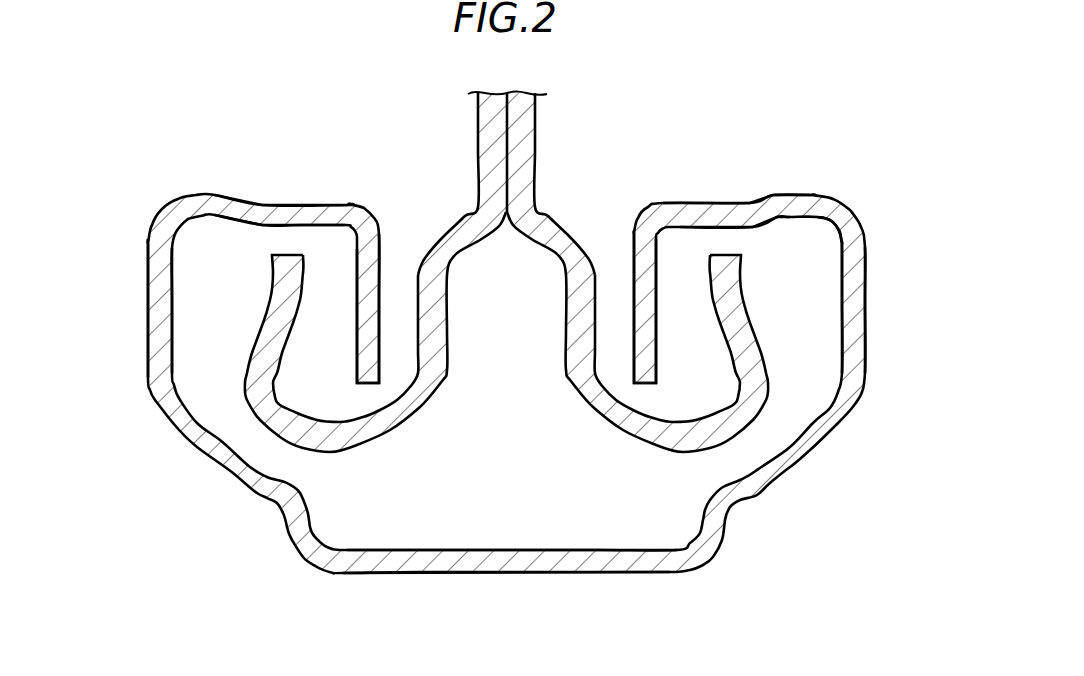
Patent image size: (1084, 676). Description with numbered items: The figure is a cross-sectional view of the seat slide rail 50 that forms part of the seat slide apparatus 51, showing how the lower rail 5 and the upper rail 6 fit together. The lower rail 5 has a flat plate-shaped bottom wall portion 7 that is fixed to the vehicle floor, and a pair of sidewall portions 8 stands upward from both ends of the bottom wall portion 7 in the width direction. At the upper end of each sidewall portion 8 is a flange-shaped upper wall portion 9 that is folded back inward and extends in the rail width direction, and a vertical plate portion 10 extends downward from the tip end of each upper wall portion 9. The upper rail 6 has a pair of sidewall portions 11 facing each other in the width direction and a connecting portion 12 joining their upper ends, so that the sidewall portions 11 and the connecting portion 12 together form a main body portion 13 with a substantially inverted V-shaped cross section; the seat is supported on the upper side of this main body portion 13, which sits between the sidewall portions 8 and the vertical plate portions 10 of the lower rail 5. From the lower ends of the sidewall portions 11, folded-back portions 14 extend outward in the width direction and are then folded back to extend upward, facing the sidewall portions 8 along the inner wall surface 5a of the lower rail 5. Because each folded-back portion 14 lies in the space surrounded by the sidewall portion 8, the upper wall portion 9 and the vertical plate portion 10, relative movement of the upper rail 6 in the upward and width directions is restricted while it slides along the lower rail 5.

The lower rail 5 is at (834, 200).
The inner wall surface 5a is at (831, 228).
The upper rail 6 is at (537, 104).
The bottom wall portion 7 is at (482, 574).
The sidewall portion 8 is at (152, 338).
The upper wall portion 9 is at (291, 212).
The vertical plate portion 10 is at (380, 283).
The sidewall portion 11 is at (576, 325).
The connecting portion 12 is at (529, 140).
The main body portion 13 is at (506, 183).
The folded-back portion 14 is at (267, 313).
The seat slide rail 50 is at (772, 522).
The seat slide apparatus 51 is at (507, 385).